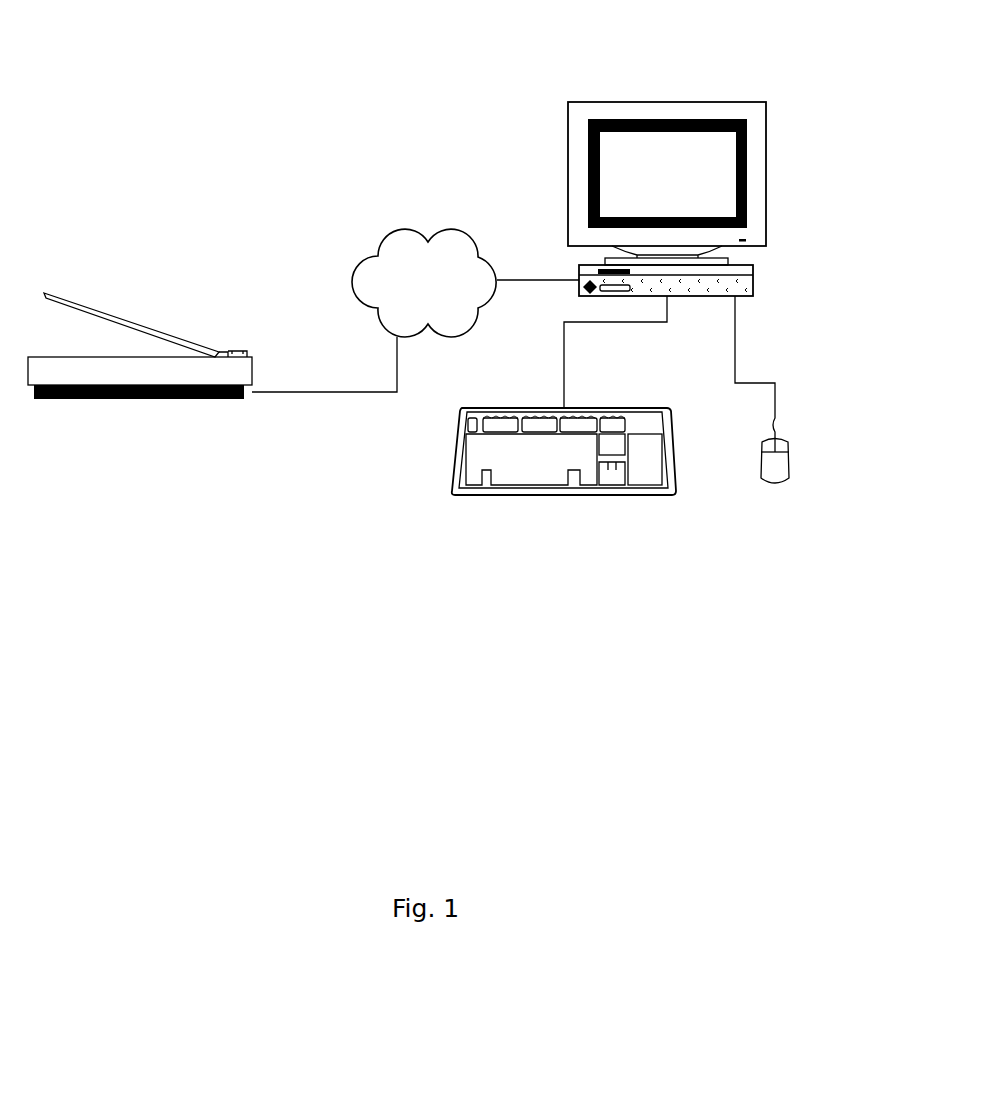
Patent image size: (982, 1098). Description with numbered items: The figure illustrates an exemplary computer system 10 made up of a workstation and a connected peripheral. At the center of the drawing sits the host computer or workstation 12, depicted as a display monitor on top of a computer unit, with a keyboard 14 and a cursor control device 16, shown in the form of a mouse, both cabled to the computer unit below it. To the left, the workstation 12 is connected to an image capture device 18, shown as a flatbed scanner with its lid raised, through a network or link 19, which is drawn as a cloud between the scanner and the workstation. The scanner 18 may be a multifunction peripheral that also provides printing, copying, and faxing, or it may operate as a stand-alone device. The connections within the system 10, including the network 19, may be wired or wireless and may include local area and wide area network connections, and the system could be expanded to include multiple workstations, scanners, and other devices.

The computer system 10 is at (411, 76).
The workstation 12 is at (667, 101).
The keyboard 14 is at (564, 498).
The cursor control device 16 is at (790, 452).
The image capture device 18 is at (142, 399).
The network or link 19 is at (405, 228).